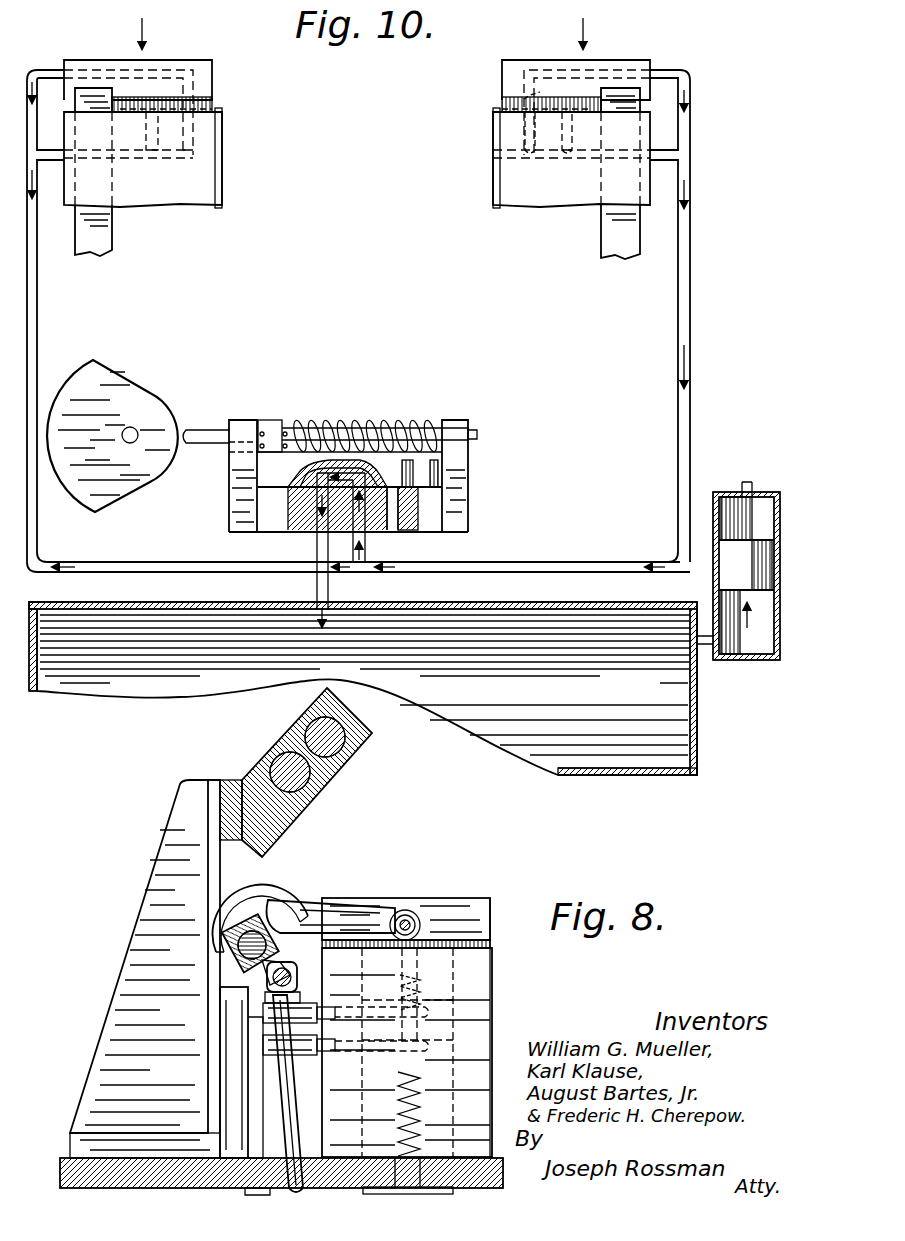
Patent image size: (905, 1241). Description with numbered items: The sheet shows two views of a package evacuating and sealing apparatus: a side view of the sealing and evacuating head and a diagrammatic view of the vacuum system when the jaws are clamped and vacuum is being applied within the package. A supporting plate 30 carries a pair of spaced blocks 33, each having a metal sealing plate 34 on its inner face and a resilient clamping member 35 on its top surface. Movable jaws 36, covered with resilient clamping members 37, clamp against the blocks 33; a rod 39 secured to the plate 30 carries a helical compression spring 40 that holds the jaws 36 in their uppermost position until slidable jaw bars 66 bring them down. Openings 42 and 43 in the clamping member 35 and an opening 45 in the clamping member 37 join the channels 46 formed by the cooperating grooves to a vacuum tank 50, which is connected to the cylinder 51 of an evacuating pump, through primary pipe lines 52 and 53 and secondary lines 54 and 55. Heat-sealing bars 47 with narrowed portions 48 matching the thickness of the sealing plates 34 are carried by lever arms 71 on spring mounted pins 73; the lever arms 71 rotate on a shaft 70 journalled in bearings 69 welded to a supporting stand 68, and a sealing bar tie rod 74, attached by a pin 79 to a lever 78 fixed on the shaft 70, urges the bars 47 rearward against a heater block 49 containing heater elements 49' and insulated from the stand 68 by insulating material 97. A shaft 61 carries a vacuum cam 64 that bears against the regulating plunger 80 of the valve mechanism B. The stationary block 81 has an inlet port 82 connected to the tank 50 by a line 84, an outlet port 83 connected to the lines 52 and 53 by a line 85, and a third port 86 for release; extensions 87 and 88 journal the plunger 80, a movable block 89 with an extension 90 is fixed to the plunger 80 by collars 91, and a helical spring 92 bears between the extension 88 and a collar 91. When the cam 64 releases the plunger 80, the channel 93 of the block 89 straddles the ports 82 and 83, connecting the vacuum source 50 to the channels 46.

In FIG. 8, the supporting plate 30 is at (58, 1162).
In FIG. 10, the block 33 is at (357, 159).
In FIG. 8, the block 33 is at (470, 1048).
In FIG. 10, the sealing plate 34 is at (224, 176).
In FIG. 8, the sealing plate 34 is at (505, 1012).
In FIG. 10, the clamping member 35 is at (136, 114).
In FIG. 10, the movable jaw 36 is at (192, 64).
In FIG. 8, the movable jaw 36 is at (488, 920).
In FIG. 10, the clamping member 37 is at (200, 104).
In FIG. 8, the clamping member 37 is at (492, 945).
In FIG. 8, the rod 39 is at (425, 1082).
In FIG. 8, the helical compression spring 40 is at (395, 1088).
In FIG. 10, the opening 42 is at (518, 112).
In FIG. 10, the opening 43 is at (554, 114).
In FIG. 10, the opening 45 is at (548, 89).
In FIG. 10, the channel 46 is at (205, 108).
In FIG. 8, the heat-sealing bar 47 is at (385, 910).
In FIG. 8, the narrowed portion 48 is at (440, 944).
In FIG. 8, the heater block 49 is at (307, 772).
In FIG. 8, the heater element 49' is at (333, 754).
In FIG. 10, the vacuum tank 50 is at (668, 770).
In FIG. 10, the cylinder 51 is at (768, 664).
In FIG. 10, the primary pipe line 52 is at (38, 326).
In FIG. 10, the primary pipe line 53 is at (680, 336).
In FIG. 10, the secondary line 54 is at (136, 160).
In FIG. 10, the secondary line 55 is at (55, 72).
In FIG. 8, the secondary line 55 is at (305, 1004).
In FIG. 10, the shaft 61 is at (131, 444).
In FIG. 10, the vacuum cam 64 is at (100, 392).
In FIG. 8, the slidable jaw bar 66 is at (470, 995).
In FIG. 8, the supporting stand 68 is at (122, 972).
In FIG. 8, the bearing 69 is at (232, 968).
In FIG. 8, the shaft 70 is at (225, 944).
In FIG. 8, the lever arm 71 is at (340, 915).
In FIG. 8, the spring mounted pin 73 is at (410, 910).
In FIG. 8, the sealing bar tie rod 74 is at (295, 1135).
In FIG. 8, the lever 78 is at (280, 952).
In FIG. 8, the pin 79 is at (292, 966).
In FIG. 10, the regulating plunger 80 is at (205, 430).
In FIG. 10, the stationary block 81 is at (464, 506).
In FIG. 10, the inlet port 82 is at (310, 532).
In FIG. 10, the outlet port 83 is at (362, 536).
In FIG. 10, the line 84 is at (316, 582).
In FIG. 10, the line 85 is at (368, 558).
In FIG. 8, the line 85 is at (252, 1086).
In FIG. 10, the third port 86 is at (412, 512).
In FIG. 10, the extension 87 is at (234, 462).
In FIG. 10, the extension 88 is at (462, 468).
In FIG. 10, the movable block 89 is at (288, 478).
In FIG. 10, the extension 90 is at (270, 420).
In FIG. 10, the collar 91 is at (262, 422).
In FIG. 10, the helical spring 92 is at (385, 420).
In FIG. 10, the channel 93 is at (295, 495).
In FIG. 8, the insulating material 97 is at (230, 780).
In FIG. 10, the valve mechanism B is at (370, 412).